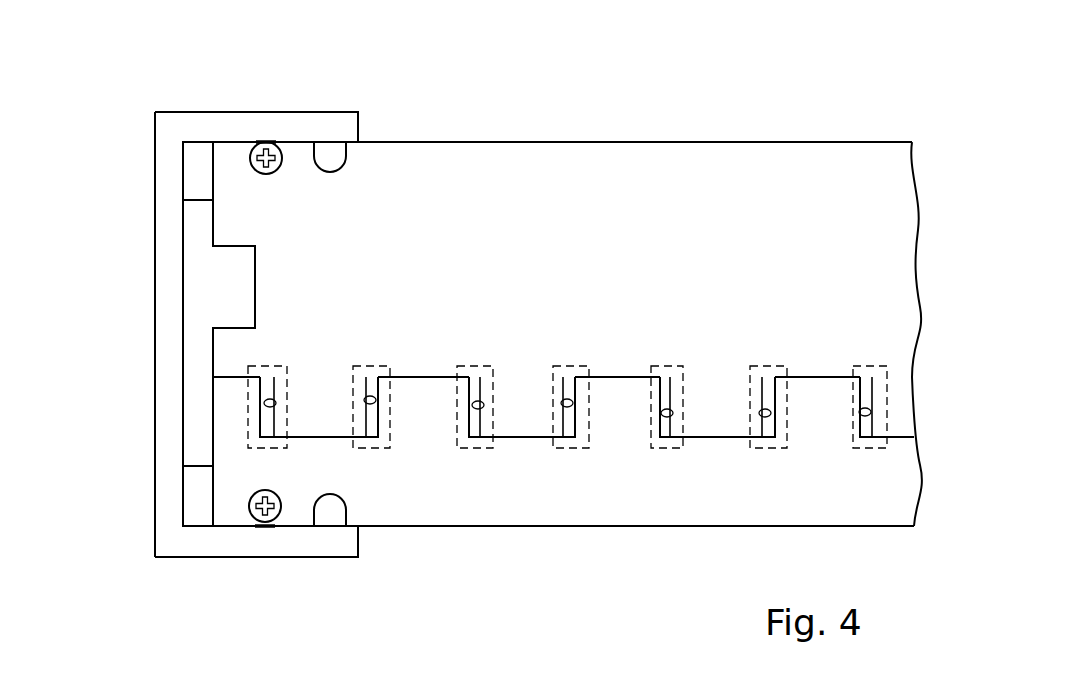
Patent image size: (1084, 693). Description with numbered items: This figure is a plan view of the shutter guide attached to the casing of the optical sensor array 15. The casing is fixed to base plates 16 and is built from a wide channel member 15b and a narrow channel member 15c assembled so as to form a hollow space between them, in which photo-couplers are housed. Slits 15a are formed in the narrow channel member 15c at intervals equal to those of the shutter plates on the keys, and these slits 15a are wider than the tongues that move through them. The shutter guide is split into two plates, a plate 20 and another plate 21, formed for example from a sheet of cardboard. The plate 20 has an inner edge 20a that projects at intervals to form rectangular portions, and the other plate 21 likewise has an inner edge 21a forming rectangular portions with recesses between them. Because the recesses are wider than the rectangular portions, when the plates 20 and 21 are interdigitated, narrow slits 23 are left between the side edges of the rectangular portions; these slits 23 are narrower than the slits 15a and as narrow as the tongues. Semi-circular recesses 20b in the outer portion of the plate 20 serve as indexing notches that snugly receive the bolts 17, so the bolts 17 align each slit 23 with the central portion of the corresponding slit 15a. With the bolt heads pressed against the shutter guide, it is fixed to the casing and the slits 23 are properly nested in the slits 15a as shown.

The optical sensor array 15 is at (491, 333).
The slits 15a is at (367, 362).
The wide channel member 15b is at (192, 155).
The narrow channel member 15c is at (197, 255).
The base plates 16 is at (202, 558).
The bolts 17 is at (275, 142).
The plate 20 is at (614, 540).
The inner edge 20a is at (332, 437).
The semi-circular recesses 20b is at (260, 143).
The plate 21 is at (602, 133).
The inner edge 21a is at (423, 380).
The slits 23 is at (364, 400).